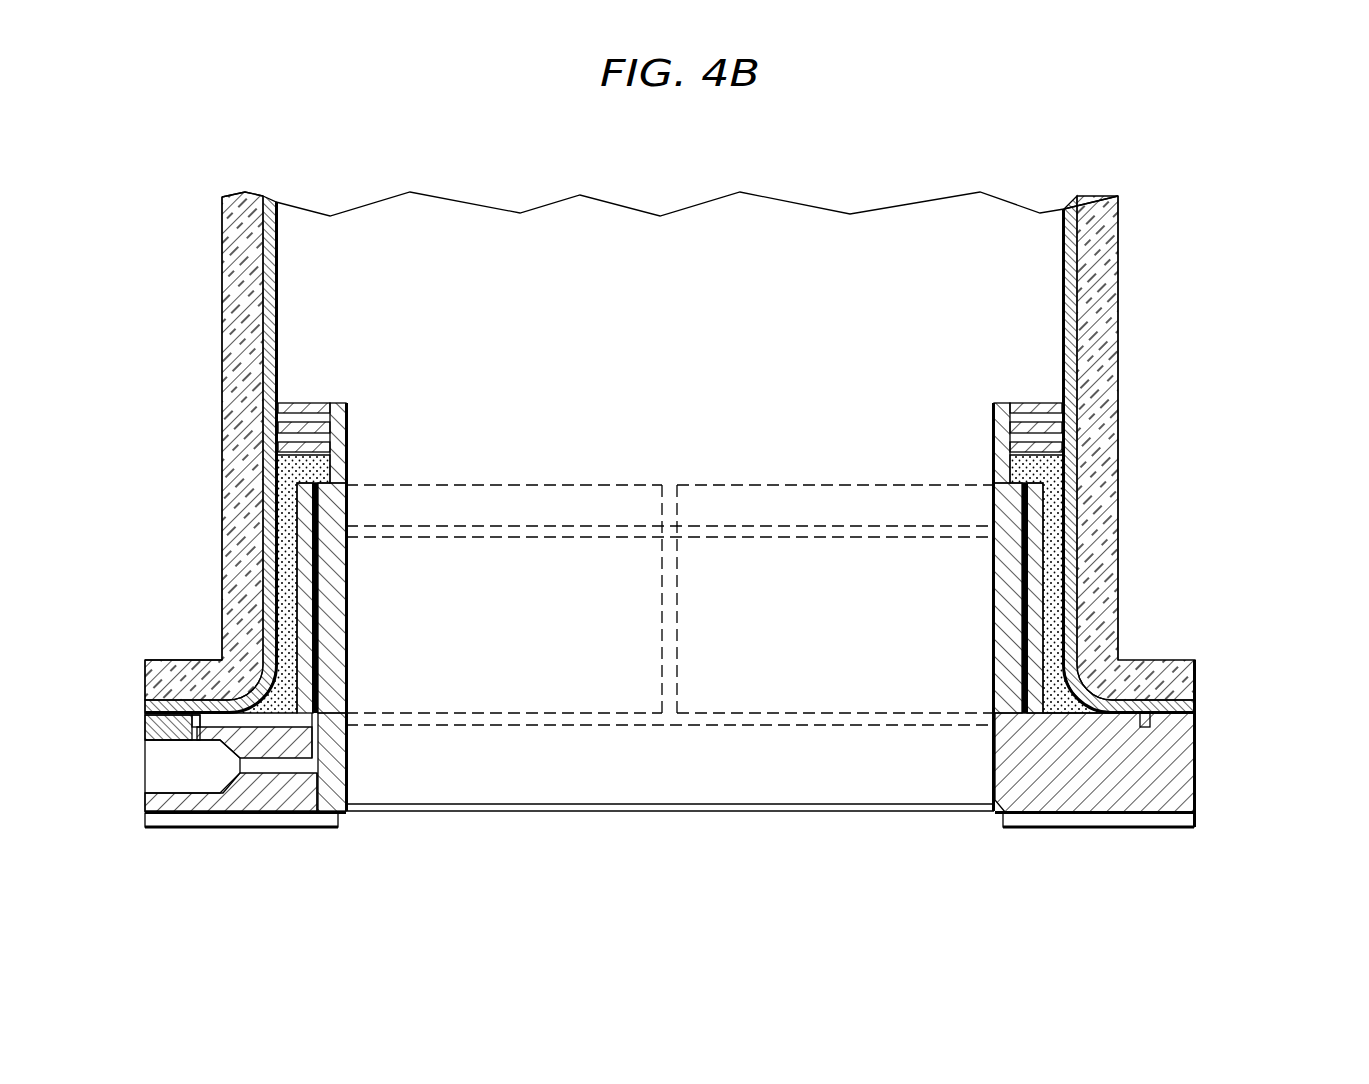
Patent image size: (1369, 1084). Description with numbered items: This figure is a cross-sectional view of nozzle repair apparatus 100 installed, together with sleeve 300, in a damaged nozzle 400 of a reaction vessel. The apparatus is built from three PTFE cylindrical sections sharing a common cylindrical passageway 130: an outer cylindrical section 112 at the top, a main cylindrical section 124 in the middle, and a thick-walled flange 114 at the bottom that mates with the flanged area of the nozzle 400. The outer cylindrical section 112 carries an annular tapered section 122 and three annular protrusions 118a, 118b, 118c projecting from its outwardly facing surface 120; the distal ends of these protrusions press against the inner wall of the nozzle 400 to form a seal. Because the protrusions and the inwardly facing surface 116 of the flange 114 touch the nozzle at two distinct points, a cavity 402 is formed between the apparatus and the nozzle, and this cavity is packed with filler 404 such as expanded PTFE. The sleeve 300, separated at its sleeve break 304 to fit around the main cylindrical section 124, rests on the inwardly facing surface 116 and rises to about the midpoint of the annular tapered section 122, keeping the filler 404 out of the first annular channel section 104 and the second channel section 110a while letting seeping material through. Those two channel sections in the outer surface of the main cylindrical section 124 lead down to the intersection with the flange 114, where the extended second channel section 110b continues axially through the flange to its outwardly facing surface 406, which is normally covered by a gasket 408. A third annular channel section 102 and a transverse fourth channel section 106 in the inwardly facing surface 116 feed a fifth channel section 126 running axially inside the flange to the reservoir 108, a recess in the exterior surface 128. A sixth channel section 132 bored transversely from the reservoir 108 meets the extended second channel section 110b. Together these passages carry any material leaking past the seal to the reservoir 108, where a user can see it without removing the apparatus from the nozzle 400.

The nozzle repair apparatus 100 is at (1000, 152).
The third annular channel section 102 is at (195, 738).
The first annular channel section 104 is at (1027, 533).
The fourth channel section 106 is at (212, 660).
The reservoir 108 is at (167, 763).
The second channel section 110a is at (315, 583).
The extended second channel section 110b is at (317, 793).
The outer cylindrical section 112 is at (1150, 410).
The flange 114 is at (1222, 768).
The inwardly facing surface 116 is at (1197, 707).
The annular protrusion 118a is at (300, 406).
The annular protrusion 118b is at (300, 428).
The annular protrusion 118c is at (300, 447).
The outwardly facing surface 120 is at (1013, 470).
The annular tapered section 122 is at (1033, 497).
The main cylindrical section 124 is at (1142, 590).
The fifth channel section 126 is at (192, 723).
The exterior surface 128 is at (145, 808).
The cylindrical passageway 130 is at (594, 775).
The sixth channel section 132 is at (257, 765).
The sleeve 300 is at (316, 685).
The sleeve break 304 is at (666, 705).
The nozzle 400 is at (1150, 270).
The cavity 402 is at (293, 497).
The filler 404 is at (293, 473).
The outwardly facing surface 406 is at (1137, 815).
The gasket 408 is at (1088, 818).